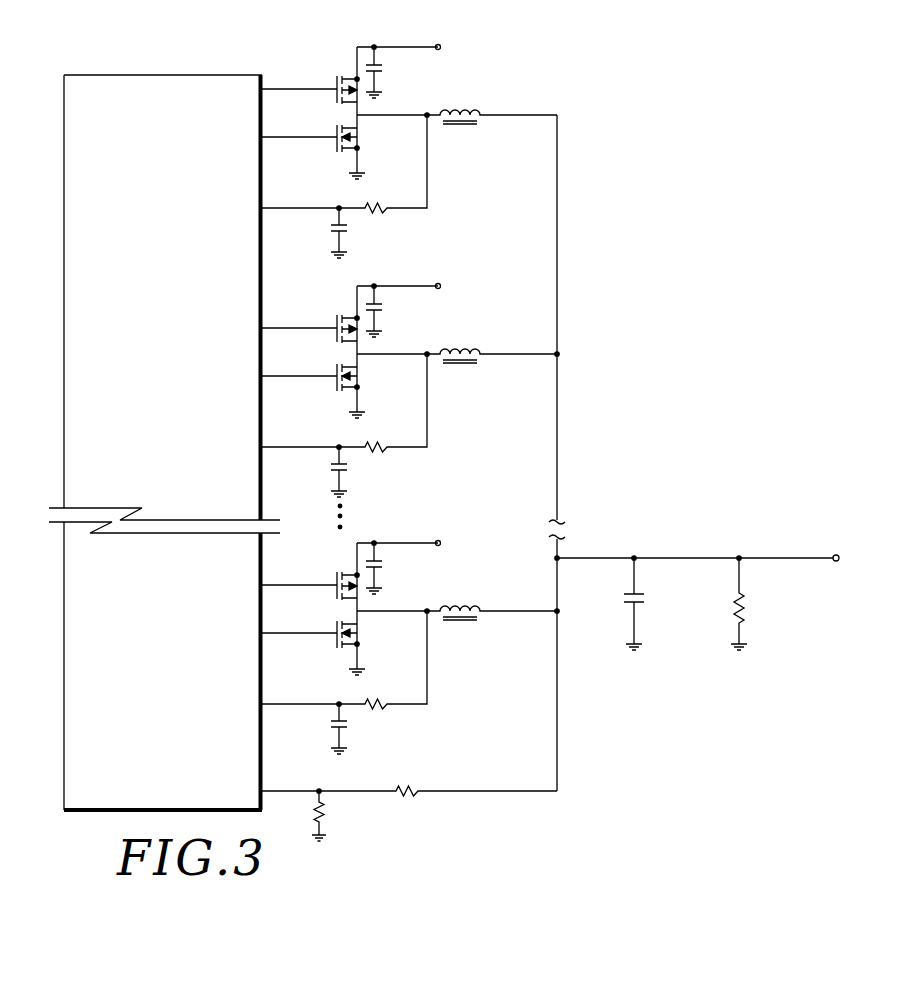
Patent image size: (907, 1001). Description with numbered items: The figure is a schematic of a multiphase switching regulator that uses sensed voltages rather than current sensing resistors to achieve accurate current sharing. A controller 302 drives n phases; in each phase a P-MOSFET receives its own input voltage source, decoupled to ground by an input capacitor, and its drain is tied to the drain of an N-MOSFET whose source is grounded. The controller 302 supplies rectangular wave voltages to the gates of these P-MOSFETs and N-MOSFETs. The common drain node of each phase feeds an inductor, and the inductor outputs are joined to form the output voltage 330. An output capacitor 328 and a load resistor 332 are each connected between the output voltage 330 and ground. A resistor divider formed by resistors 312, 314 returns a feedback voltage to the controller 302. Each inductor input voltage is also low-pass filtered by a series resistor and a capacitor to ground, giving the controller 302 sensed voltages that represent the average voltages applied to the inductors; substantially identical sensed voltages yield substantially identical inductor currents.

The controller 302 is at (64, 75).
The resistor 312 is at (408, 797).
The resistor 314 is at (328, 813).
The output capacitor 328 is at (617, 597).
The output voltage 330 is at (887, 545).
The load resistor 332 is at (785, 612).